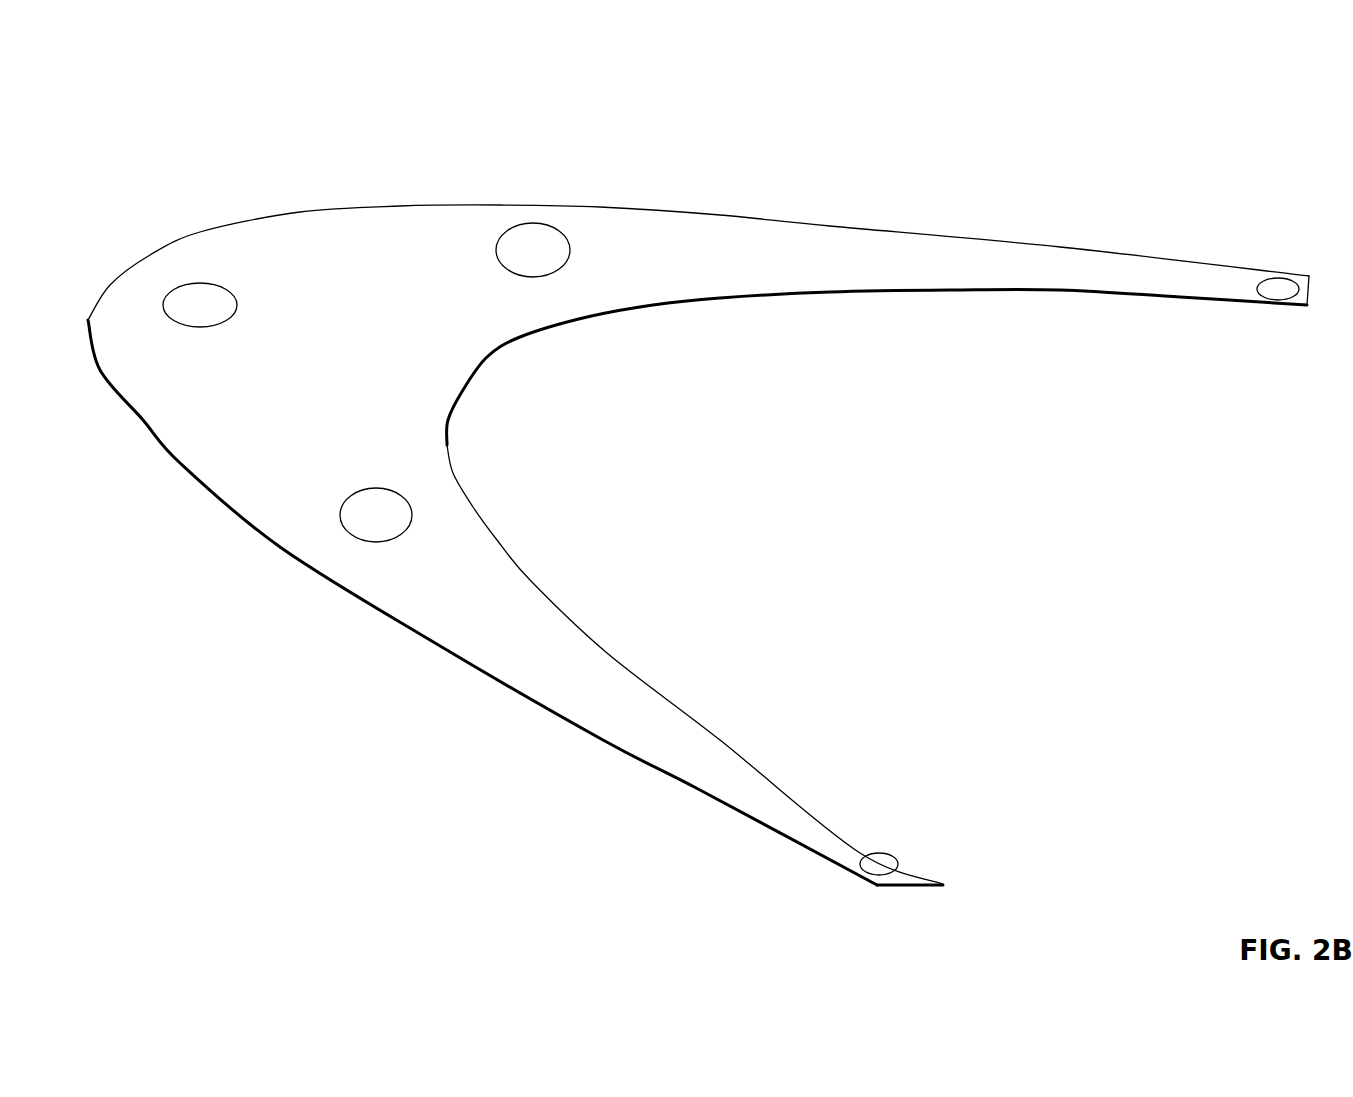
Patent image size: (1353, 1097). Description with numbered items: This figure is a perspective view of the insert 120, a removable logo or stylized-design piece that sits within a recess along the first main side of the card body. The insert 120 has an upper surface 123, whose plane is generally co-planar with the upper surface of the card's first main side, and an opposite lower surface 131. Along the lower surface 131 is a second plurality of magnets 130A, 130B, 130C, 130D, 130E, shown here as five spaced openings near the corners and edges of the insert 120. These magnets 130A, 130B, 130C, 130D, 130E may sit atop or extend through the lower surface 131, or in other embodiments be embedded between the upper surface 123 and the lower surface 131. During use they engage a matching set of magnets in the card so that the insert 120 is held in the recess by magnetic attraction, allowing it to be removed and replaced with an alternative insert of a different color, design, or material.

The insert 120 is at (712, 464).
The upper surface 123 is at (827, 296).
The lower surface 131 is at (533, 632).
The magnet 130A is at (1278, 290).
The magnet 130B is at (533, 243).
The magnet 130C is at (192, 302).
The magnet 130D is at (375, 530).
The magnet 130E is at (880, 862).